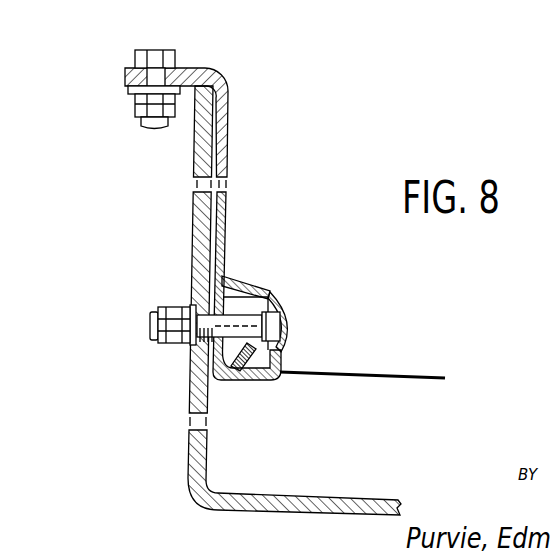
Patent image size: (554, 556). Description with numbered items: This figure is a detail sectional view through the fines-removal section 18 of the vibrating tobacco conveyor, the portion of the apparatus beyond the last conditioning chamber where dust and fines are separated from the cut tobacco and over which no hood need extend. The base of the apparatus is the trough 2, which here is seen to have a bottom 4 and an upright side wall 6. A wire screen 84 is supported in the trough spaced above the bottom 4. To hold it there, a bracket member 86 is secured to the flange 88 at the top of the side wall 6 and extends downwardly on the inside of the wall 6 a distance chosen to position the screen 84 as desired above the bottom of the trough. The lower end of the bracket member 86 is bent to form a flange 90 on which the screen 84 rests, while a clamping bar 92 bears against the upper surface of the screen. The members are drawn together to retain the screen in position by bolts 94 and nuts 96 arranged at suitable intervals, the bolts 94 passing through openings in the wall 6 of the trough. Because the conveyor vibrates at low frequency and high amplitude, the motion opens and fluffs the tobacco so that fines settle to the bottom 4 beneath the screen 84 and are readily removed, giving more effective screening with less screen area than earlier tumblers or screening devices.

The trough 2 is at (168, 457).
The bottom 4 is at (281, 495).
The side wall 6 is at (200, 258).
The section 18 is at (348, 329).
The wire screen 84 is at (385, 372).
The bracket member 86 is at (221, 213).
The flange 88 is at (197, 68).
The flange 90 is at (246, 381).
The clamping bar 92 is at (242, 284).
The bolt 94 is at (246, 325).
The nut 96 is at (172, 343).